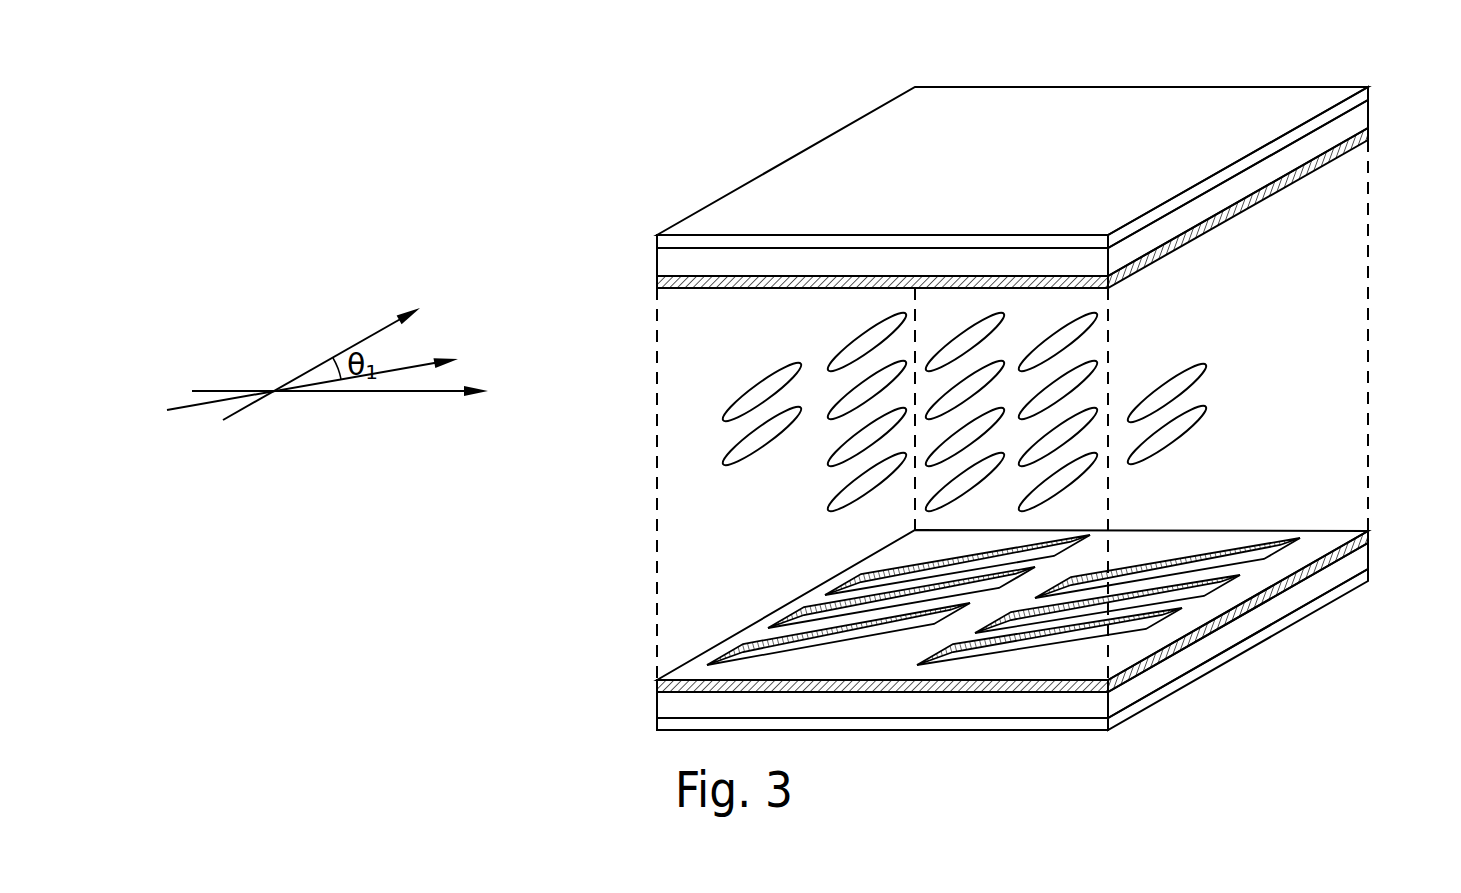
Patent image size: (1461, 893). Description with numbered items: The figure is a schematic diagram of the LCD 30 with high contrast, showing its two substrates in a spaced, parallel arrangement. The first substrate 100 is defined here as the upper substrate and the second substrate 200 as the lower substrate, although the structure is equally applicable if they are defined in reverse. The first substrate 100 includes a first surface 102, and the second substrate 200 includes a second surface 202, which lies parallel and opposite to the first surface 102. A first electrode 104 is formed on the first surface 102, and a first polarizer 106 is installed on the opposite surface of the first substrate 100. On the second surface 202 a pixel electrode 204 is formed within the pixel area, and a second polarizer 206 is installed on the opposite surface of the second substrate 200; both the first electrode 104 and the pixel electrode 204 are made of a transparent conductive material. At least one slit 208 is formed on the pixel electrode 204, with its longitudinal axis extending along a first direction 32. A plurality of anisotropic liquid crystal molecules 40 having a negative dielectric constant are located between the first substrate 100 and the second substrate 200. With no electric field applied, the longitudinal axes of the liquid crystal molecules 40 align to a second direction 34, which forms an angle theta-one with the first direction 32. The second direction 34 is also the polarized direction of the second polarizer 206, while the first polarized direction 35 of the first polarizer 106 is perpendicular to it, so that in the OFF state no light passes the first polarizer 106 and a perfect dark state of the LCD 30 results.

The LCD 30 is at (635, 250).
The first direction 32 is at (330, 373).
The second direction 34 is at (338, 347).
The first polarized direction 35 is at (359, 394).
The liquid crystal molecules 40 is at (1195, 377).
The first substrate 100 is at (1357, 121).
The first surface 102 is at (1058, 166).
The first electrode 104 is at (1367, 130).
The first polarizer 106 is at (1368, 88).
The second substrate 200 is at (1185, 655).
The second surface 202 is at (1051, 609).
The pixel electrode 204 is at (1367, 535).
The second polarizer 206 is at (1165, 695).
The slit 208 is at (1018, 647).